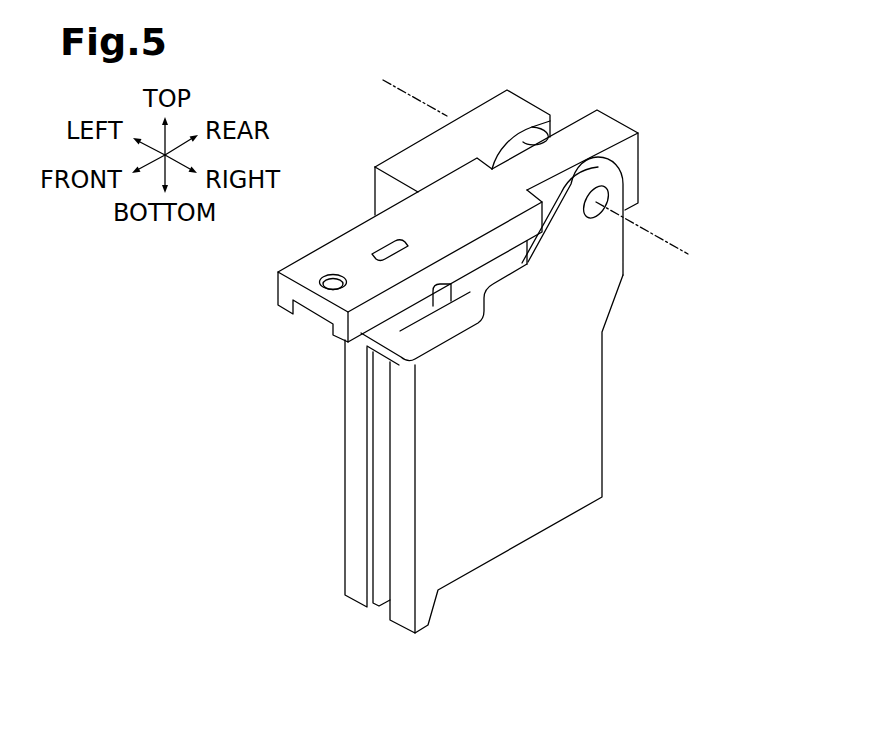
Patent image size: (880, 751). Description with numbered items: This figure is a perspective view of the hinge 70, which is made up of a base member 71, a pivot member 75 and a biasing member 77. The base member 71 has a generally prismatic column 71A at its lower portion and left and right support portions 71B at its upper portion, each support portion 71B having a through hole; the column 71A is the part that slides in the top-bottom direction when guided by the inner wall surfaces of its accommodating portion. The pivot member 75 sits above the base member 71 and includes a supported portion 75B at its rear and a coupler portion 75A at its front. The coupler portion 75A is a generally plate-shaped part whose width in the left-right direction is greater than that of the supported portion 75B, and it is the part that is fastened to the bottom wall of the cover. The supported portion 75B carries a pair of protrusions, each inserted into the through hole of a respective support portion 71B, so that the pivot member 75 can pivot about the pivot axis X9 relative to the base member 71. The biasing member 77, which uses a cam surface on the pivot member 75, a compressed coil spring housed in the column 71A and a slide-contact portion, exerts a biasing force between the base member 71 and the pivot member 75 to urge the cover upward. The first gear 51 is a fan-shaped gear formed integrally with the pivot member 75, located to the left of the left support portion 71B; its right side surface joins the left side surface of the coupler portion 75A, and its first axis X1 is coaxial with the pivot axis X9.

The first gear 51 is at (502, 120).
The hinge 70 is at (517, 354).
The base member 71 is at (609, 474).
The column 71A is at (358, 497).
The support portion 71B is at (531, 133).
The pivot member 75 is at (267, 301).
The coupler portion 75A is at (308, 272).
The supported portion 75B is at (630, 162).
The biasing member 77 is at (452, 310).
The pivot axis X9 is at (677, 241).
The first axis X1 is at (415, 98).